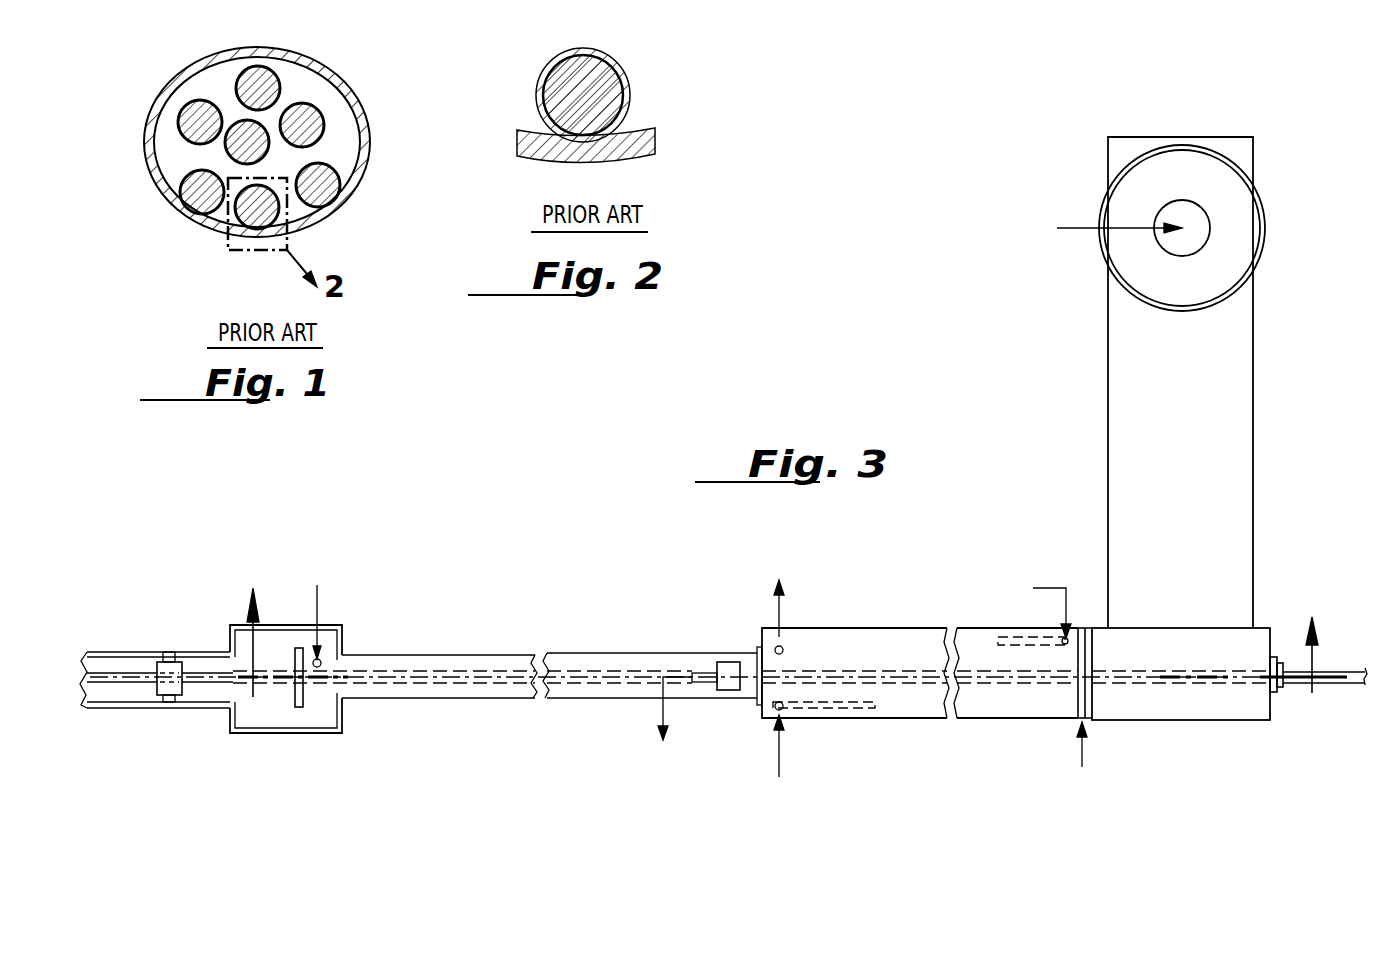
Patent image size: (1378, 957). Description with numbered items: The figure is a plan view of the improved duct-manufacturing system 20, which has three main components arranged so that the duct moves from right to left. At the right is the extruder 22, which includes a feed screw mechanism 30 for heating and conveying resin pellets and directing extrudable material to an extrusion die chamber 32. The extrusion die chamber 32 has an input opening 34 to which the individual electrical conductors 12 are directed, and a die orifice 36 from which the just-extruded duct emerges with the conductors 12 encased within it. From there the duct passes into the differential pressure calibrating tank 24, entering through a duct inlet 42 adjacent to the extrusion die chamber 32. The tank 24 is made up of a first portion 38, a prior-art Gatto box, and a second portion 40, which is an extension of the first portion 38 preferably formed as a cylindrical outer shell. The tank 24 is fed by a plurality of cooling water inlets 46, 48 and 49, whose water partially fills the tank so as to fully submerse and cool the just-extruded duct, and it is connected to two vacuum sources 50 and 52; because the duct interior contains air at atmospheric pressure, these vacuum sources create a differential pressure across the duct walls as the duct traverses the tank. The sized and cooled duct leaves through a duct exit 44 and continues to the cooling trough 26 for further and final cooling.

The electrical conductors 12 is at (1343, 670).
The system 20 is at (443, 793).
The extruder 22 is at (1221, 740).
The differential pressure calibrating tank 24 is at (604, 708).
The cooling trough 26 is at (177, 714).
The feed screw mechanism 30 is at (1122, 382).
The extrusion die chamber 32 is at (1177, 710).
The input opening 34 is at (1285, 683).
The die orifice 36 is at (1093, 679).
The first portion 38 is at (928, 706).
The second portion 40 is at (470, 694).
The duct inlet 42 is at (1085, 673).
The duct exit 44 is at (297, 678).
The cooling water inlet 46 is at (320, 610).
The cooling water inlet 48 is at (1053, 588).
The cooling water inlet 49 is at (780, 763).
The vacuum source 50 is at (665, 711).
The vacuum source 52 is at (780, 608).